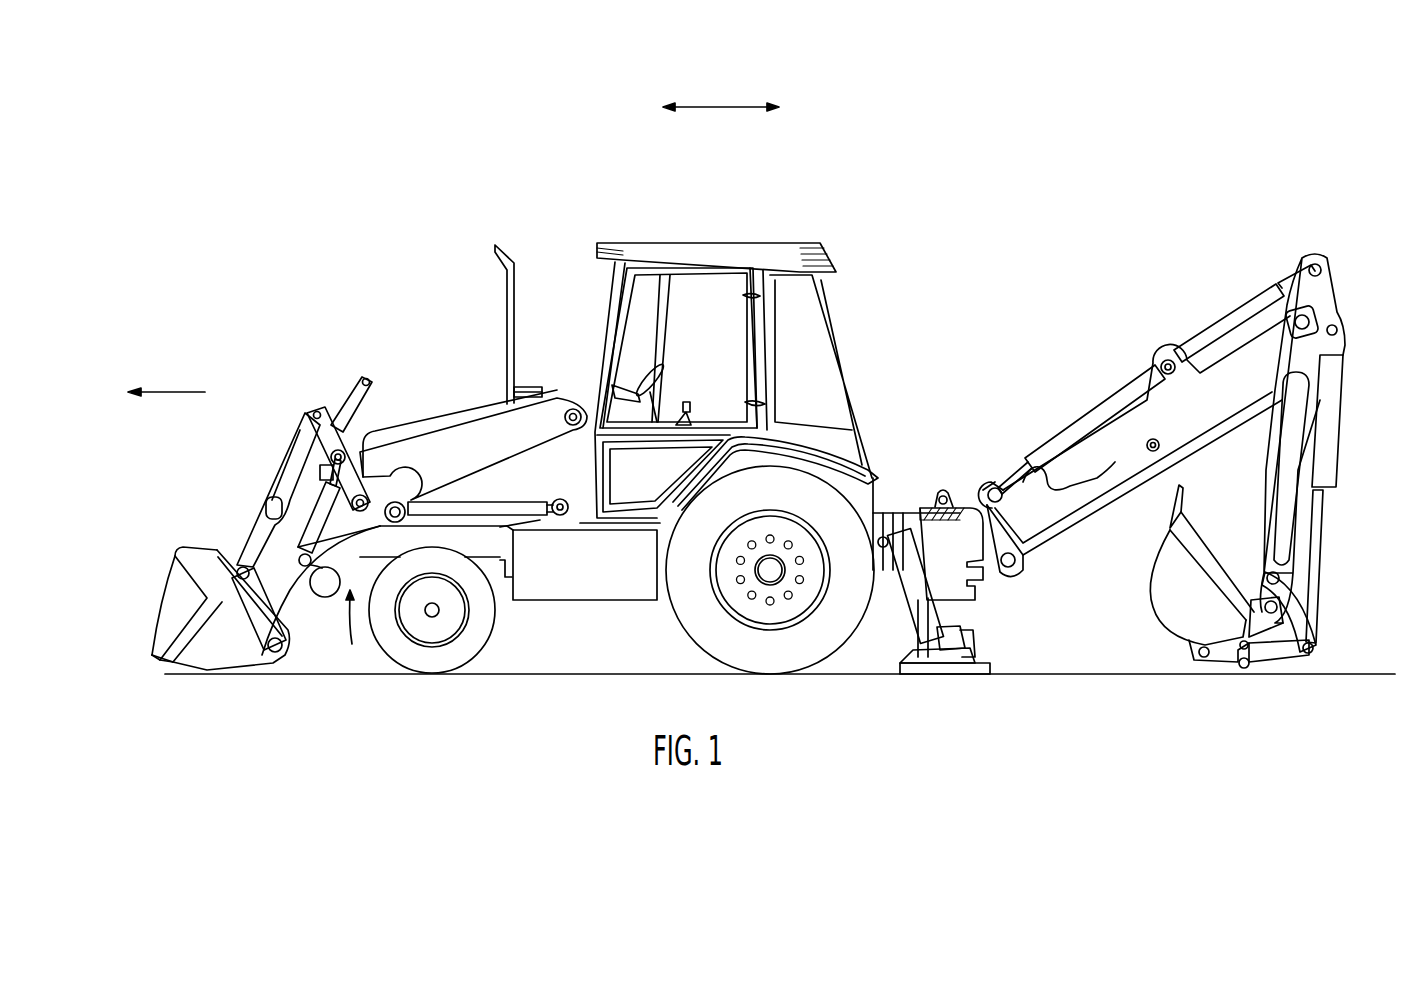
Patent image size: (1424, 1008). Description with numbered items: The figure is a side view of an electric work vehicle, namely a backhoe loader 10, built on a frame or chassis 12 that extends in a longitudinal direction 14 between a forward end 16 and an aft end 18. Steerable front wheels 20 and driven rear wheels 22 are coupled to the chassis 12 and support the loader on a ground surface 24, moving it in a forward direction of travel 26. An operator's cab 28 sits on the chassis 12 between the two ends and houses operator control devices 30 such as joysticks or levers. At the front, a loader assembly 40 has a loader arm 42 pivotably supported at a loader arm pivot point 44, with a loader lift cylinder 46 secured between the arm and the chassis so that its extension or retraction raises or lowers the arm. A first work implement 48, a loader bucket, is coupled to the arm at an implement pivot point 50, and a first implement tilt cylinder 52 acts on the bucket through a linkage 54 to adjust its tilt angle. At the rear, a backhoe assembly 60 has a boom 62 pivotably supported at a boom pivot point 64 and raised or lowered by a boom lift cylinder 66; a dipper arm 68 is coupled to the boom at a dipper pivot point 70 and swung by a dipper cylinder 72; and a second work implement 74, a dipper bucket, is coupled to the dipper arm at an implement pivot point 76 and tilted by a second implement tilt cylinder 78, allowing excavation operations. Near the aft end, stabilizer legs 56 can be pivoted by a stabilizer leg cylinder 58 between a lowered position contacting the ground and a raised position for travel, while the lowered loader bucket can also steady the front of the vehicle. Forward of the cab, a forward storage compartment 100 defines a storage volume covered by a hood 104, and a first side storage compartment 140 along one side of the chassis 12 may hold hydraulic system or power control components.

The backhoe loader 10 is at (318, 187).
The chassis 12 is at (490, 555).
The longitudinal direction 14 is at (717, 104).
The forward end 16 is at (350, 630).
The aft end 18 is at (982, 480).
The front wheels 20 is at (432, 678).
The rear wheels 22 is at (772, 678).
The ground surface 24 is at (1333, 673).
The forward direction of travel 26 is at (162, 392).
The operator's cab 28 is at (690, 243).
The operator control devices 30 is at (690, 400).
The loader assembly 40 is at (216, 528).
The loader arm 42 is at (463, 430).
The loader arm pivot point 44 is at (600, 380).
The loader lift cylinder 46 is at (488, 503).
The first work implement 48 is at (165, 637).
The implement pivot point 50 is at (275, 652).
The first implement tilt cylinder 52 is at (355, 400).
The linkage 54 is at (302, 445).
The stabilizer legs 56 is at (940, 680).
The stabilizer leg cylinder 58 is at (905, 565).
The backhoe assembly 60 is at (1172, 307).
The boom 62 is at (1180, 412).
The boom pivot point 64 is at (1008, 570).
The boom lift cylinder 66 is at (1066, 434).
The dipper arm 68 is at (1278, 470).
The dipper pivot point 70 is at (1303, 320).
The dipper cylinder 72 is at (1278, 303).
The second work implement 74 is at (1152, 628).
The implement pivot point 76 is at (1244, 670).
The second implement tilt cylinder 78 is at (1322, 464).
The forward storage compartment 100 is at (413, 438).
The hood 104 is at (483, 407).
The first side storage compartment 140 is at (598, 576).